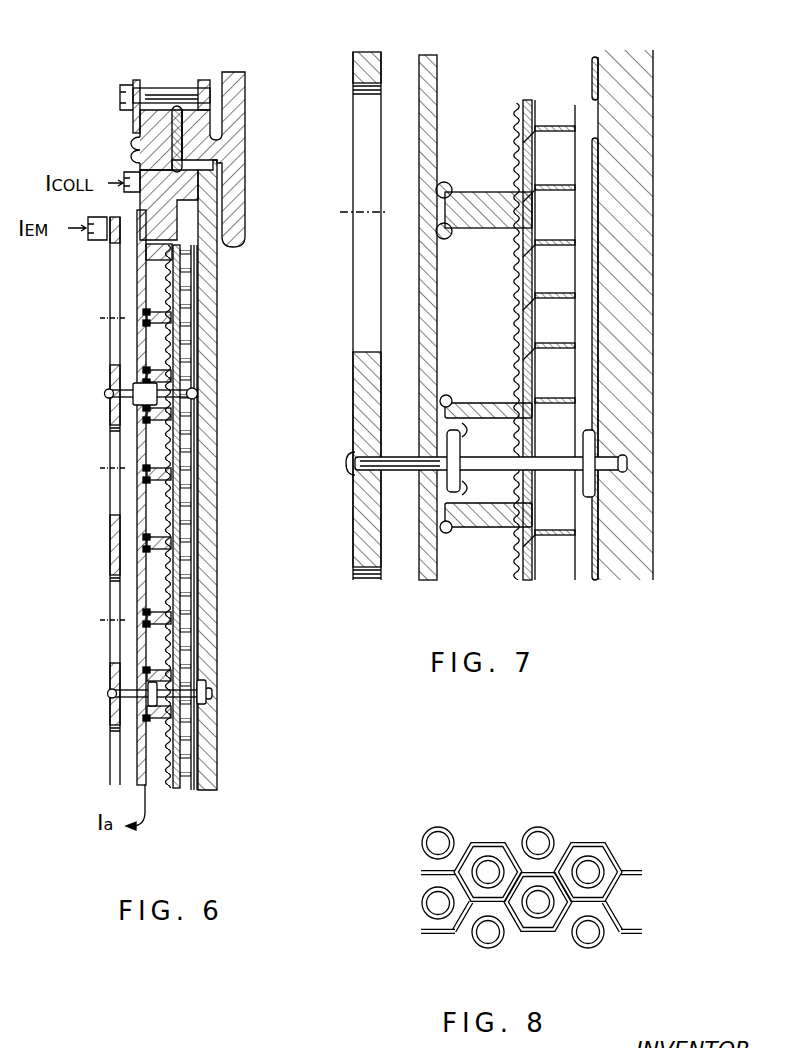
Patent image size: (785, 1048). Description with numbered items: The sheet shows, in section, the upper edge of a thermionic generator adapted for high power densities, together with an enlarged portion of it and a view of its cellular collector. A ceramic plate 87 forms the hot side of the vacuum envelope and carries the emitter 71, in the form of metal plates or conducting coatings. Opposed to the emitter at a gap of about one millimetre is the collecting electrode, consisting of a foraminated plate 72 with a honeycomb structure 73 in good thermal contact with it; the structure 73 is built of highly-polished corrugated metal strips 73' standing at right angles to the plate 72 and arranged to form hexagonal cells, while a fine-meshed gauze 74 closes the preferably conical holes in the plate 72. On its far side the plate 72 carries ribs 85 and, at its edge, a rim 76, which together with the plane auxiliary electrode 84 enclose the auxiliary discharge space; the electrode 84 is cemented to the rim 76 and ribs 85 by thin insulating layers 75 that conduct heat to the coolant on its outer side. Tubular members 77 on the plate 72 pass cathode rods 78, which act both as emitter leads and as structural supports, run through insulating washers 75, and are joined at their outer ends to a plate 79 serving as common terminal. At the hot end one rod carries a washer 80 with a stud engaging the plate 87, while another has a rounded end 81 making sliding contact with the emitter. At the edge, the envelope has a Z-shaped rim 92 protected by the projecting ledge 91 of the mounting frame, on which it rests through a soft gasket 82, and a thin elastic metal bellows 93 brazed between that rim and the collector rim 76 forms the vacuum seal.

In FIG. 6, the emitter 71 is at (202, 556).
In FIG. 7, the emitter 71 is at (599, 150).
In FIG. 6, the foraminated plate 72 is at (185, 755).
In FIG. 7, the foraminated plate 72 is at (521, 112).
In FIG. 8, the cellular or honeycomb structure 73 is at (543, 882).
In FIG. 6, the corrugated metal strips 73' is at (231, 517).
In FIG. 7, the corrugated metal strips 73' is at (551, 342).
In FIG. 8, the corrugated metal strips 73' is at (548, 888).
In FIG. 6, the fine-meshed gauze 74 is at (166, 511).
In FIG. 7, the fine-meshed gauze 74 is at (516, 300).
In FIG. 6, the insulating layers 75 is at (104, 515).
In FIG. 7, the insulating layers 75 is at (443, 182).
In FIG. 6, the rim 76 is at (168, 232).
In FIG. 6, the tubular members 77 is at (114, 563).
In FIG. 7, the tubular members 77 is at (482, 402).
In FIG. 6, the cathode rods 78 is at (196, 678).
In FIG. 7, the cathode rods 78 is at (518, 455).
In FIG. 6, the plate 79 is at (115, 672).
In FIG. 7, the plate 79 is at (368, 366).
In FIG. 6, the washer 80 is at (185, 690).
In FIG. 7, the washer 80 is at (583, 482).
In FIG. 6, the rounded ends 81 is at (197, 394).
In FIG. 6, the soft gasket 82 is at (176, 107).
In FIG. 6, the auxiliary electrode 84 is at (138, 487).
In FIG. 7, the auxiliary electrode 84 is at (438, 82).
In FIG. 6, the ribs 85 is at (114, 434).
In FIG. 7, the ribs 85 is at (482, 191).
In FIG. 6, the ceramic plate 87 is at (213, 604).
In FIG. 7, the ceramic plate 87 is at (646, 200).
In FIG. 6, the projecting ledge 91 is at (246, 166).
In FIG. 6, the Z-shaped rim 92 is at (141, 121).
In FIG. 6, the metal bellows 93 is at (133, 147).